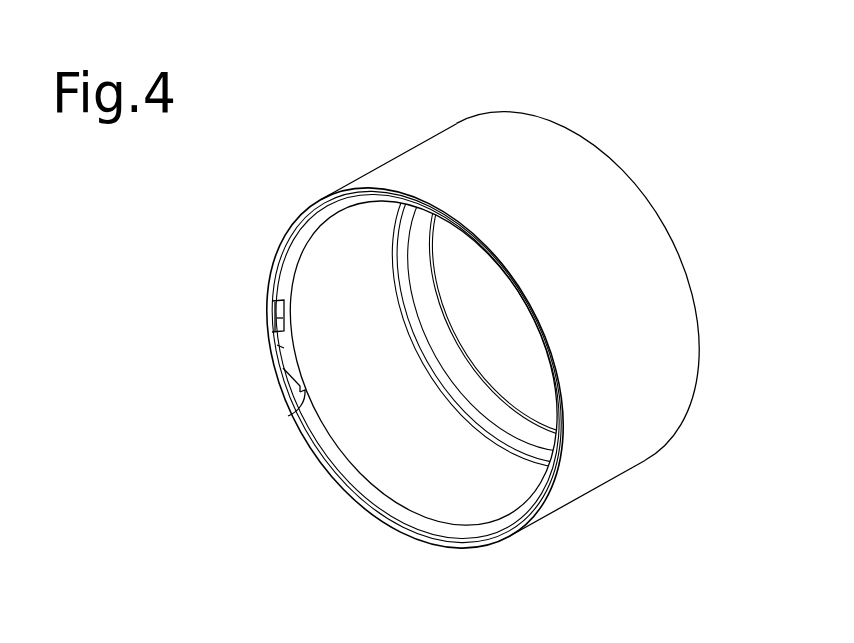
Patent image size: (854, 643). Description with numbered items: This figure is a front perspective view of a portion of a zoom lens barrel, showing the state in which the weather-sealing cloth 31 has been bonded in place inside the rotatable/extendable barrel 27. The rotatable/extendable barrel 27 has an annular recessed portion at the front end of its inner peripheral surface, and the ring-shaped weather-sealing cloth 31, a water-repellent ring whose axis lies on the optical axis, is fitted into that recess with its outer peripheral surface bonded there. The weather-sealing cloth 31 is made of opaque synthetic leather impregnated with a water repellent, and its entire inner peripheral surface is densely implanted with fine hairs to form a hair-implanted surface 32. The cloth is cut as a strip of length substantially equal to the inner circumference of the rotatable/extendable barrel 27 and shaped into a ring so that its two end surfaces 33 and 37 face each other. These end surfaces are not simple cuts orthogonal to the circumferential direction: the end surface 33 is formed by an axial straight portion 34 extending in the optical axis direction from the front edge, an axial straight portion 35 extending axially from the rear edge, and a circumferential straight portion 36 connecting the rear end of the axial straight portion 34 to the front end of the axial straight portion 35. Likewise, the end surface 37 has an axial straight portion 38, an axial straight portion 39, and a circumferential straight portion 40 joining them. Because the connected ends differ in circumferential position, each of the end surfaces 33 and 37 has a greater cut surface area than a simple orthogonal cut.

The rotatable/extendable barrel 27 is at (632, 223).
The weather-sealing cloth 31 is at (360, 475).
The hair-implanted surface 32 is at (403, 510).
The end surface 33 is at (280, 347).
The axial straight portion (first edge) 34 is at (272, 302).
The axial straight portion (second edge) 35 is at (305, 390).
The circumferential straight portion (connecting portion) 36 is at (283, 330).
The end surface 37 is at (283, 370).
The axial straight portion (first edge) 38 is at (215, 288).
The axial straight portion (second edge) 39 is at (268, 450).
The circumferential straight portion (connecting portion) 40 is at (207, 332).